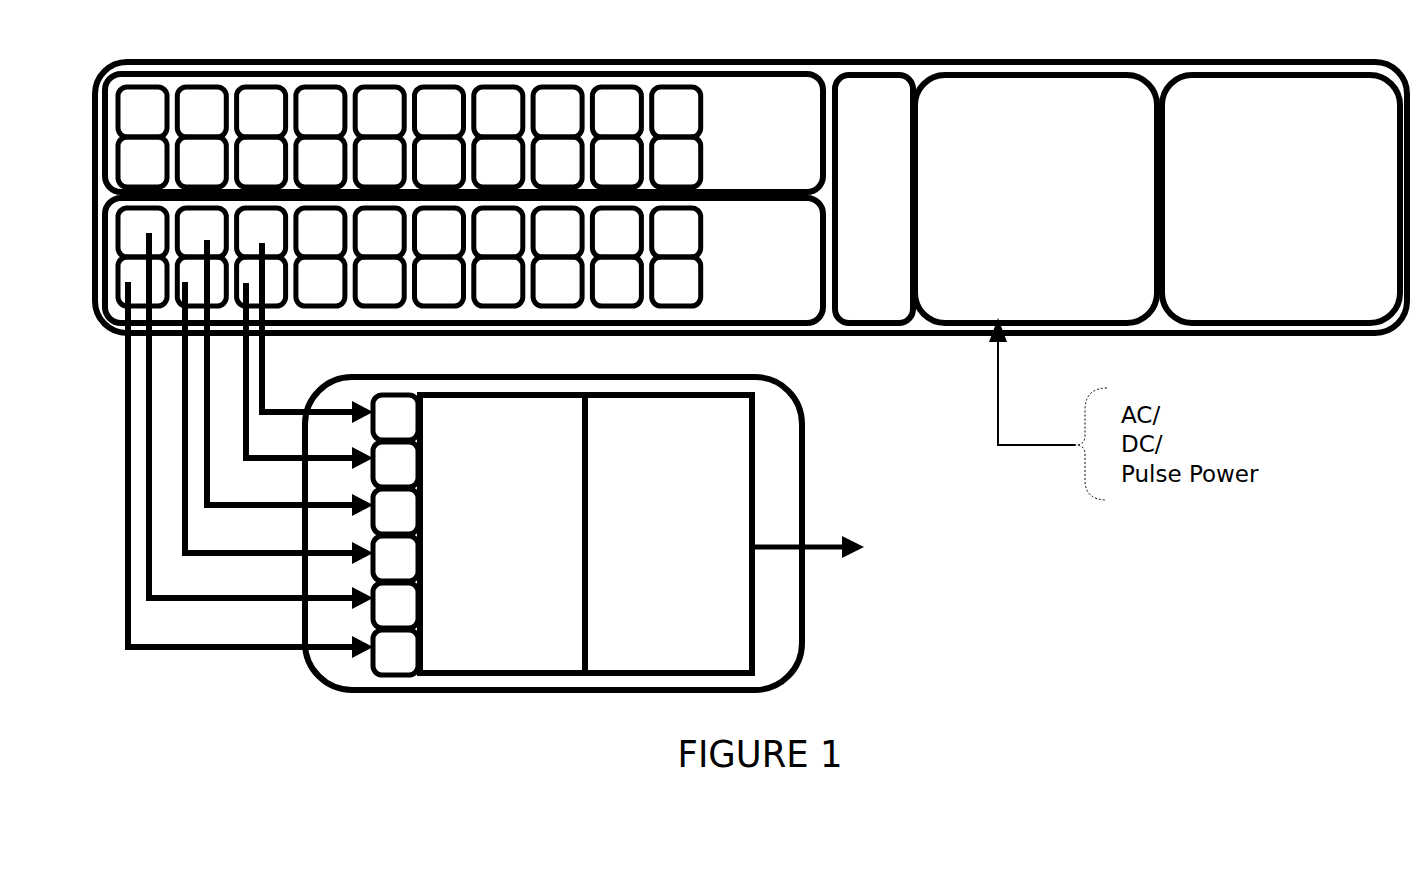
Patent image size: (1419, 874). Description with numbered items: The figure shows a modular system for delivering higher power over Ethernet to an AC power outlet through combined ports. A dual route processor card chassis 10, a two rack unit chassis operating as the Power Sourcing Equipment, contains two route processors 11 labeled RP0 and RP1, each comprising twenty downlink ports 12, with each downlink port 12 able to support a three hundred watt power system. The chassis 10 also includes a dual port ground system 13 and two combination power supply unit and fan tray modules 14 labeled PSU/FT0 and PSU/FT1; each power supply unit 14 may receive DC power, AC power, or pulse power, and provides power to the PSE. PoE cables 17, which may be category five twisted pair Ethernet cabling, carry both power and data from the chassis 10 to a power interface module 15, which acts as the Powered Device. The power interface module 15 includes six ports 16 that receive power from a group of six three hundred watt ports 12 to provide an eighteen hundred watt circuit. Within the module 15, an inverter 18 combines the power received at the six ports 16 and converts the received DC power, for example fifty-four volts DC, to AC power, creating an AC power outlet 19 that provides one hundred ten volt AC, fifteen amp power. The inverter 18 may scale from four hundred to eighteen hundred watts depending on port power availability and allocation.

The route processor card chassis 10 is at (751, 174).
The route processor 11 is at (715, 223).
The downlink port 12 is at (547, 112).
The dual port ground system 13 is at (893, 73).
The combination power supply unit and fan tray module 14 is at (1202, 117).
The power interface module 15 is at (584, 515).
The port 16 is at (392, 442).
The PoE cable 17 is at (199, 603).
The inverter 18 is at (500, 390).
The AC power outlet 19 is at (660, 392).